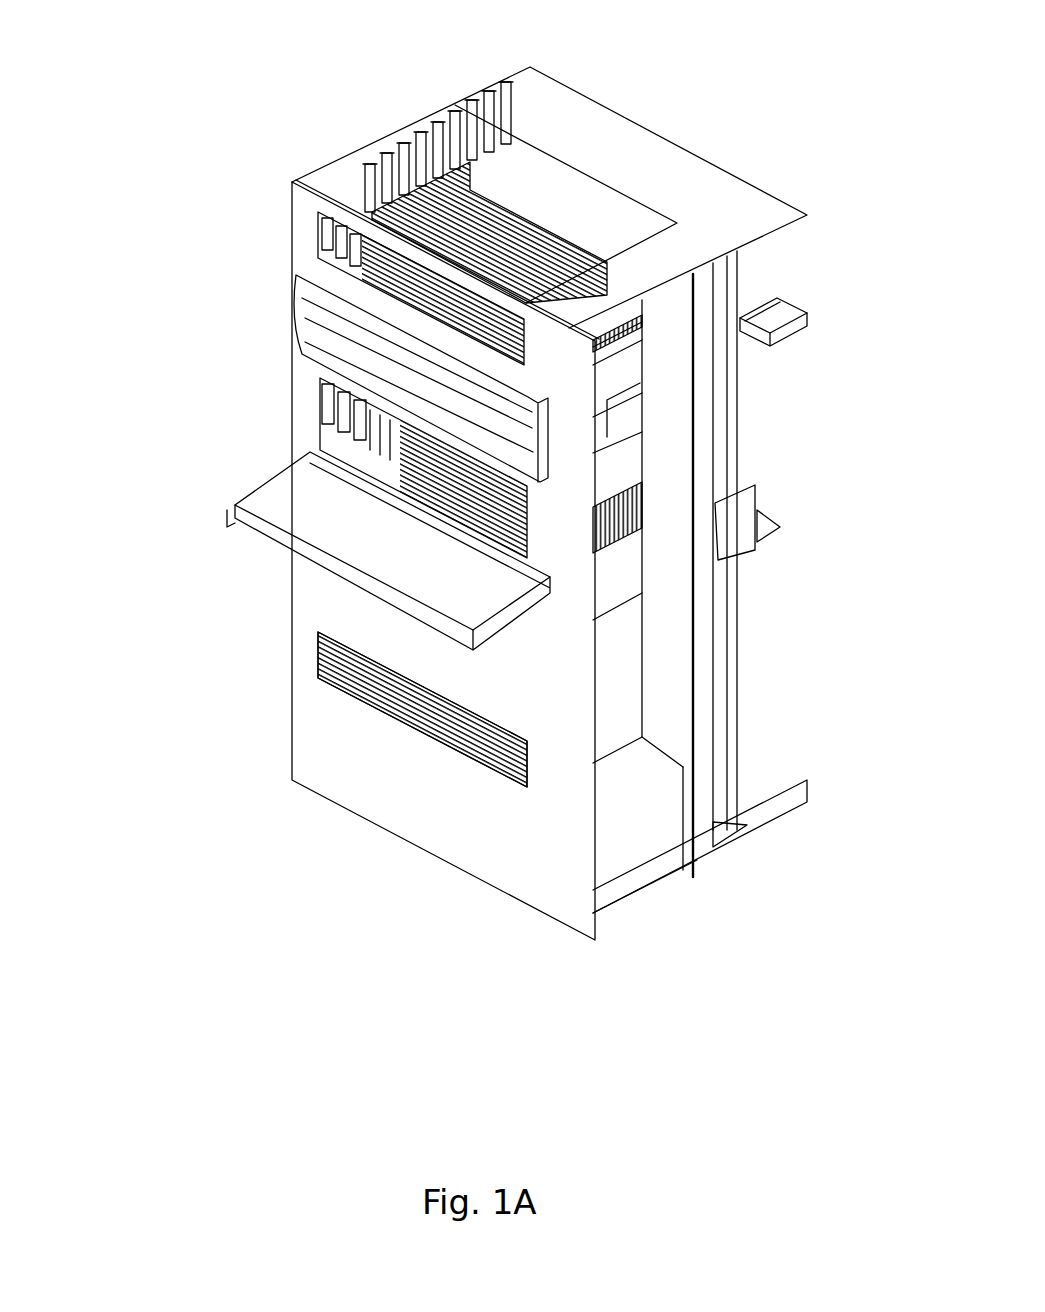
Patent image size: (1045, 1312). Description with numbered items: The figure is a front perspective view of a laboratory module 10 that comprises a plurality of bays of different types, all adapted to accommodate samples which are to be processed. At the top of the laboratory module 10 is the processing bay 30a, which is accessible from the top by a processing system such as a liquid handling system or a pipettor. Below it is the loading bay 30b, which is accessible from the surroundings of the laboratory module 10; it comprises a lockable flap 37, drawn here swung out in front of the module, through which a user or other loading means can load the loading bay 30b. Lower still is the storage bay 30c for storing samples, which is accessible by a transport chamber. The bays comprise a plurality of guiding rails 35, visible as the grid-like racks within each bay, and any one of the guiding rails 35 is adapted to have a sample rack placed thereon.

The laboratory module 10 is at (262, 80).
The processing bay 30a is at (548, 197).
The loading bay 30b is at (312, 415).
The storage bay 30c is at (416, 738).
The guiding rails 35 is at (507, 748).
The lockable flap 37 is at (427, 373).